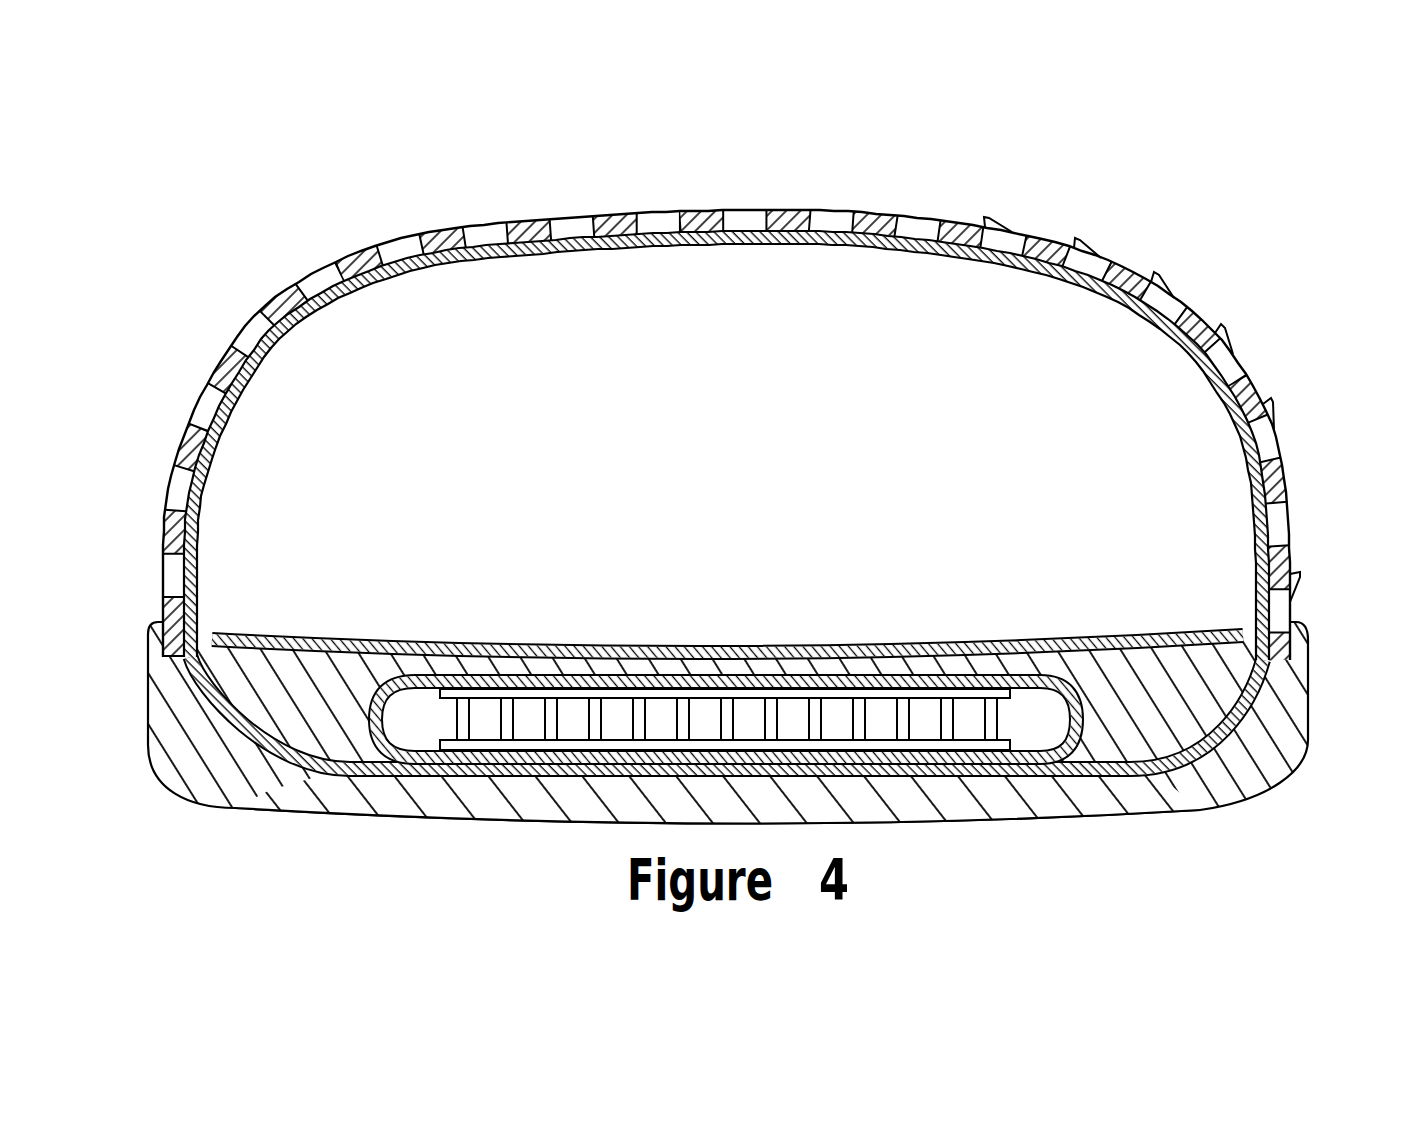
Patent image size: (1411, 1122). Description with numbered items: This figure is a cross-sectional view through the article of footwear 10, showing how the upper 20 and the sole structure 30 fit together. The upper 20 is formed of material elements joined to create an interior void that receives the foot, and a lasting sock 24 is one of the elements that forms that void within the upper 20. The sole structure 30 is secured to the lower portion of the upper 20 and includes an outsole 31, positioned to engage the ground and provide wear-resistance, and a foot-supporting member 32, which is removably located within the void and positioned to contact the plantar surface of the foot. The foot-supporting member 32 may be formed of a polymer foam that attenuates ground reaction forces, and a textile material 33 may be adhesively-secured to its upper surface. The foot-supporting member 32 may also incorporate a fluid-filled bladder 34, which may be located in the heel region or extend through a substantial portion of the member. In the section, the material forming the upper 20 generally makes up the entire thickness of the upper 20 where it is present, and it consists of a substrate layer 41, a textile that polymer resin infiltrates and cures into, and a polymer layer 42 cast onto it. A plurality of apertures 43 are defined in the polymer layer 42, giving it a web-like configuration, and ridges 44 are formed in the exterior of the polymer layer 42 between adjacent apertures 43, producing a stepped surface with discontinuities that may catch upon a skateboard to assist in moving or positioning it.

The article of footwear 10 is at (358, 188).
The upper 20 is at (736, 404).
The lasting sock 24 is at (290, 760).
The sole structure 30 is at (166, 783).
The outsole 31 is at (380, 822).
The foot-supporting member 32 is at (300, 690).
The textile material 33 is at (962, 648).
The fluid-filled bladder 34 is at (706, 712).
The substrate layer 41 is at (770, 246).
The polymer layer 42 is at (505, 226).
The apertures 43 is at (630, 225).
The ridges 44 is at (1070, 232).